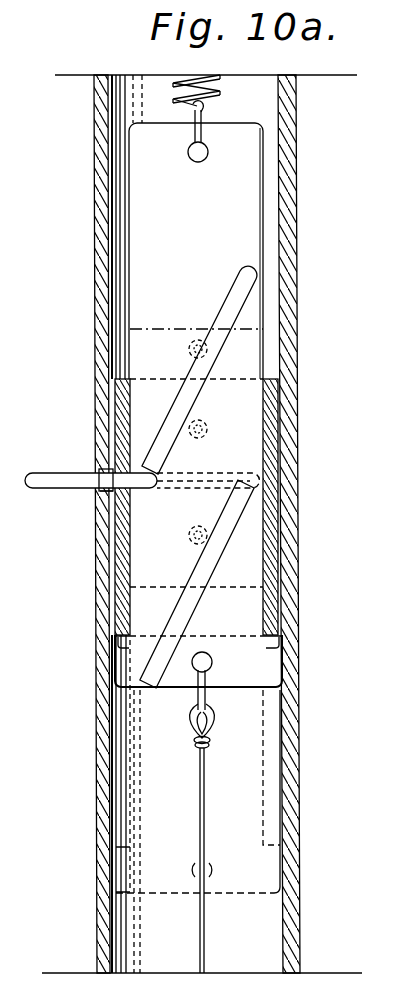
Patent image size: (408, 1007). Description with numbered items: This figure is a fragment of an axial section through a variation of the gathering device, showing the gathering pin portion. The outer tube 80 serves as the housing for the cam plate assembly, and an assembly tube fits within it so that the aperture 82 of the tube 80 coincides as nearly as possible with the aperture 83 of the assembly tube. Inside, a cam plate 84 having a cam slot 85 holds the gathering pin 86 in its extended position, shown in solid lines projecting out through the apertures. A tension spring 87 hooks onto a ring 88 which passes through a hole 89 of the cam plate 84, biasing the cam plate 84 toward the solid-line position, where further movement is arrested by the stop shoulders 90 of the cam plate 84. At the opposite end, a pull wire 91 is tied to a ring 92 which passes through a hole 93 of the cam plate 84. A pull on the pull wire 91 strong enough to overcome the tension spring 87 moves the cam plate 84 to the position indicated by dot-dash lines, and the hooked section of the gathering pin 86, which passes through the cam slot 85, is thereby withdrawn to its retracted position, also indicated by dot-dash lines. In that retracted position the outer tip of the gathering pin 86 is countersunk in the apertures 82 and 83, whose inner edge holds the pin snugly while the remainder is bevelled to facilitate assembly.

The tube 80 is at (100, 242).
The aperture 82 is at (105, 472).
The aperture 83 is at (100, 491).
The cam plate 84 is at (172, 193).
The cam slot 85 is at (233, 296).
The gathering pin 86 is at (52, 479).
The tension spring 87 is at (172, 87).
The ring 88 is at (130, 127).
The hole 89 is at (189, 150).
The stop shoulders 90 is at (120, 645).
The pull wire 91 is at (205, 921).
The ring 92 is at (196, 693).
The hole 93 is at (191, 664).